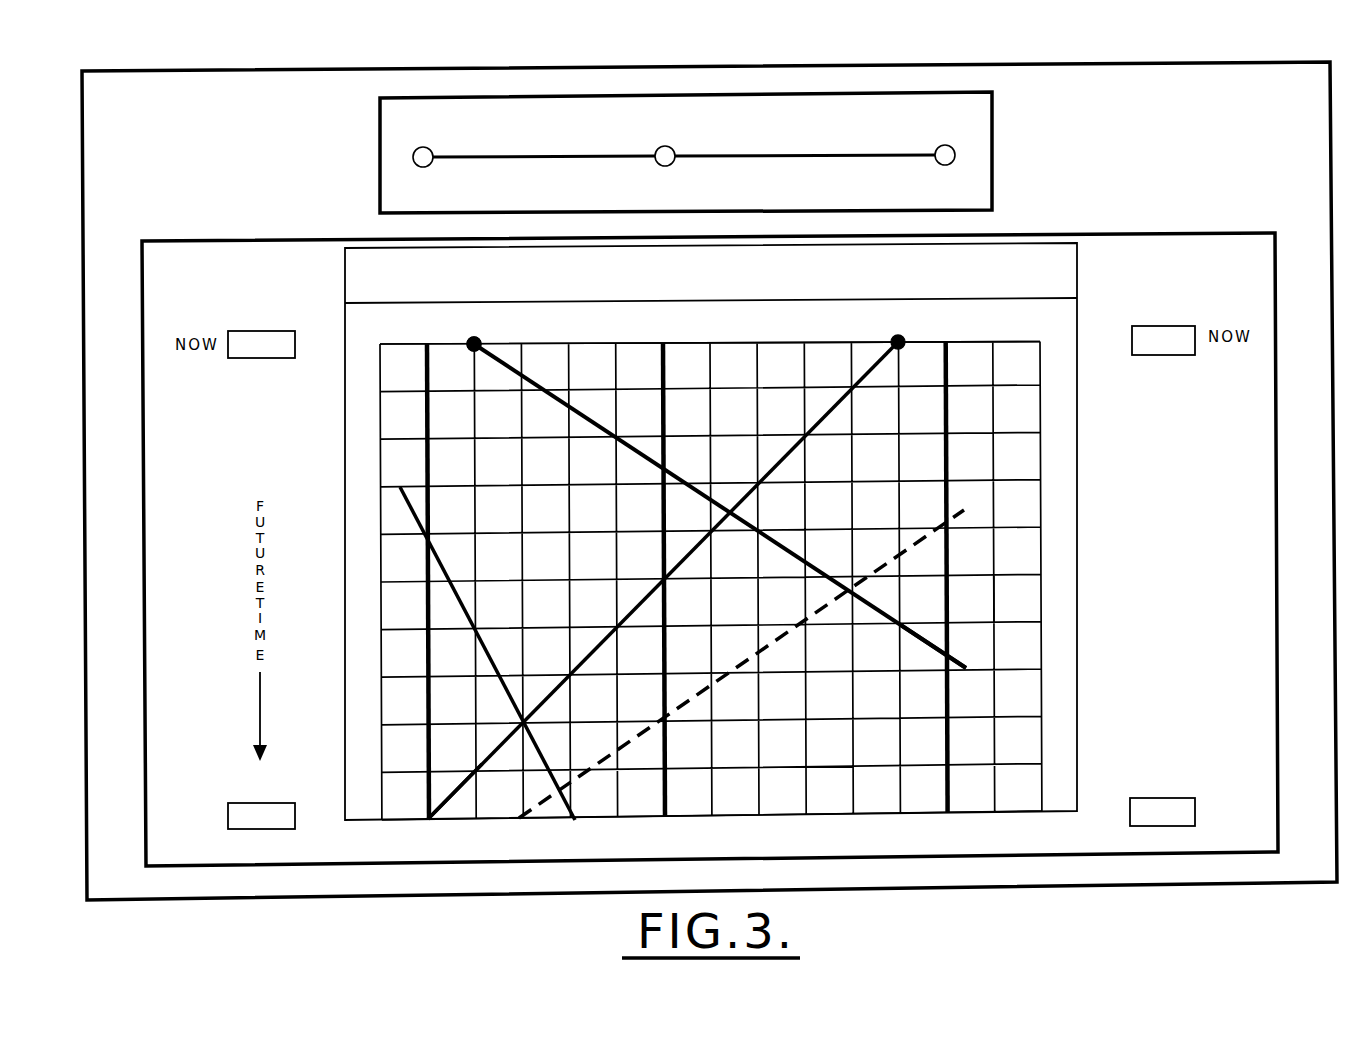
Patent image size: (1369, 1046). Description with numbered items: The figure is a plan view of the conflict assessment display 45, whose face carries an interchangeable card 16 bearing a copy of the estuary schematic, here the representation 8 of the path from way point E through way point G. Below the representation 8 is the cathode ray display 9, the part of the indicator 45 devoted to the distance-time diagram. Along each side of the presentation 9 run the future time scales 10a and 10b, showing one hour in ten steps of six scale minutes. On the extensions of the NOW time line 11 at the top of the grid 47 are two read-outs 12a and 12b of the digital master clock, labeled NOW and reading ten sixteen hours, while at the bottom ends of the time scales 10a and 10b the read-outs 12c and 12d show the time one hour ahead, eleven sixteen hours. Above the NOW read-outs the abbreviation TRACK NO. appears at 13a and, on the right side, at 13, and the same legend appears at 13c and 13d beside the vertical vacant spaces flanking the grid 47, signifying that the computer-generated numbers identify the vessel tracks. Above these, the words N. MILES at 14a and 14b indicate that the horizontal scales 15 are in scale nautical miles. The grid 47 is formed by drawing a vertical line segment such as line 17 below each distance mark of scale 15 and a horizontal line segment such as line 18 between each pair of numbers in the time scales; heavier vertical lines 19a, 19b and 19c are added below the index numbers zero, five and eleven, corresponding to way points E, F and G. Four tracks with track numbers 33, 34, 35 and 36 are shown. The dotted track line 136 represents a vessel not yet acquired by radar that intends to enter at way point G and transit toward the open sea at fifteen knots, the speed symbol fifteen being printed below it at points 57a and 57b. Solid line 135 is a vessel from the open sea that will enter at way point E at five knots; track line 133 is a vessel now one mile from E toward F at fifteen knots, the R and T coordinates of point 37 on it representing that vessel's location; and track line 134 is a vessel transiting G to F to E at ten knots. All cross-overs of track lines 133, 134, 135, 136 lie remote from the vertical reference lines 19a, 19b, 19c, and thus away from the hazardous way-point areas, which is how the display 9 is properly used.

The conflict assessment display 45 is at (82, 71).
The horizontal scales 15 is at (360, 258).
The interchangeable card 16 is at (380, 98).
The estuary schematic representation 8 is at (878, 157).
The TRACK NO. legend 13c is at (340, 152).
The TRACK NO. legend 13d is at (1080, 134).
The cathode ray display 9 is at (998, 235).
The NOW time line 11 is at (780, 344).
The horizontal line segment 18 is at (392, 439).
The vertical reference line 19a is at (428, 810).
The vertical reference line 19b is at (668, 808).
The vertical reference line 19c is at (950, 808).
The future time scale 10a is at (322, 834).
The future time scale 10b is at (1100, 834).
The N. MILES legend 14a is at (286, 299).
The N. MILES legend 14b is at (1194, 272).
The TRACK NO. abbreviation 13a is at (177, 322).
The TRACK NO label (right) 13 is at (1260, 311).
The NOW time read out 12a is at (268, 358).
The NOW time read out 12b is at (1175, 355).
The time read out 12c is at (248, 803).
The time read out 12d is at (1165, 798).
The point 37 is at (470, 340).
The track number 33 is at (478, 333).
The track number 34 is at (898, 331).
The track line 133 is at (617, 436).
The track line 134 is at (806, 438).
The solid track line 135 is at (487, 640).
The dotted track line 136 is at (702, 692).
The track number 35 is at (962, 668).
The path segment of aircraft 34 at track 0 17 is at (482, 806).
The speed symbol point 57a is at (790, 632).
The speed symbol point 57b is at (637, 735).
The track number 36 is at (1056, 528).
The display grid 47 is at (1026, 612).